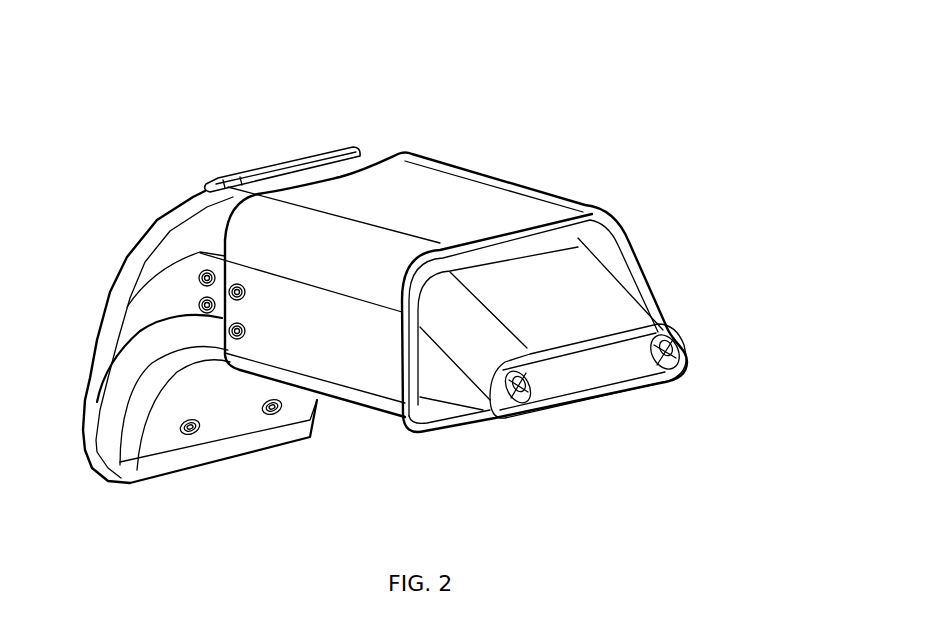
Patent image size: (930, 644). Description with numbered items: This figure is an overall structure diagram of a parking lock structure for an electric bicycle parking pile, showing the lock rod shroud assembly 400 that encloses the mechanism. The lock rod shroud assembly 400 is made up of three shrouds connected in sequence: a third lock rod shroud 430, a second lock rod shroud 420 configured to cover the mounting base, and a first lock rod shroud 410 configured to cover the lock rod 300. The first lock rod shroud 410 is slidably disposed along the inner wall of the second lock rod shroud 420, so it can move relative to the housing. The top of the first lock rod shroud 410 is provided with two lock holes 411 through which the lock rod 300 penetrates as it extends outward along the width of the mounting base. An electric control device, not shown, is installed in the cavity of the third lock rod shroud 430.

The lock rod 300 is at (668, 370).
The lock rod shroud assembly 400 is at (170, 241).
The first lock rod shroud 410 is at (600, 294).
The lock hole 411 is at (514, 402).
The second lock rod shroud 420 is at (447, 198).
The third lock rod shroud 430 is at (293, 178).